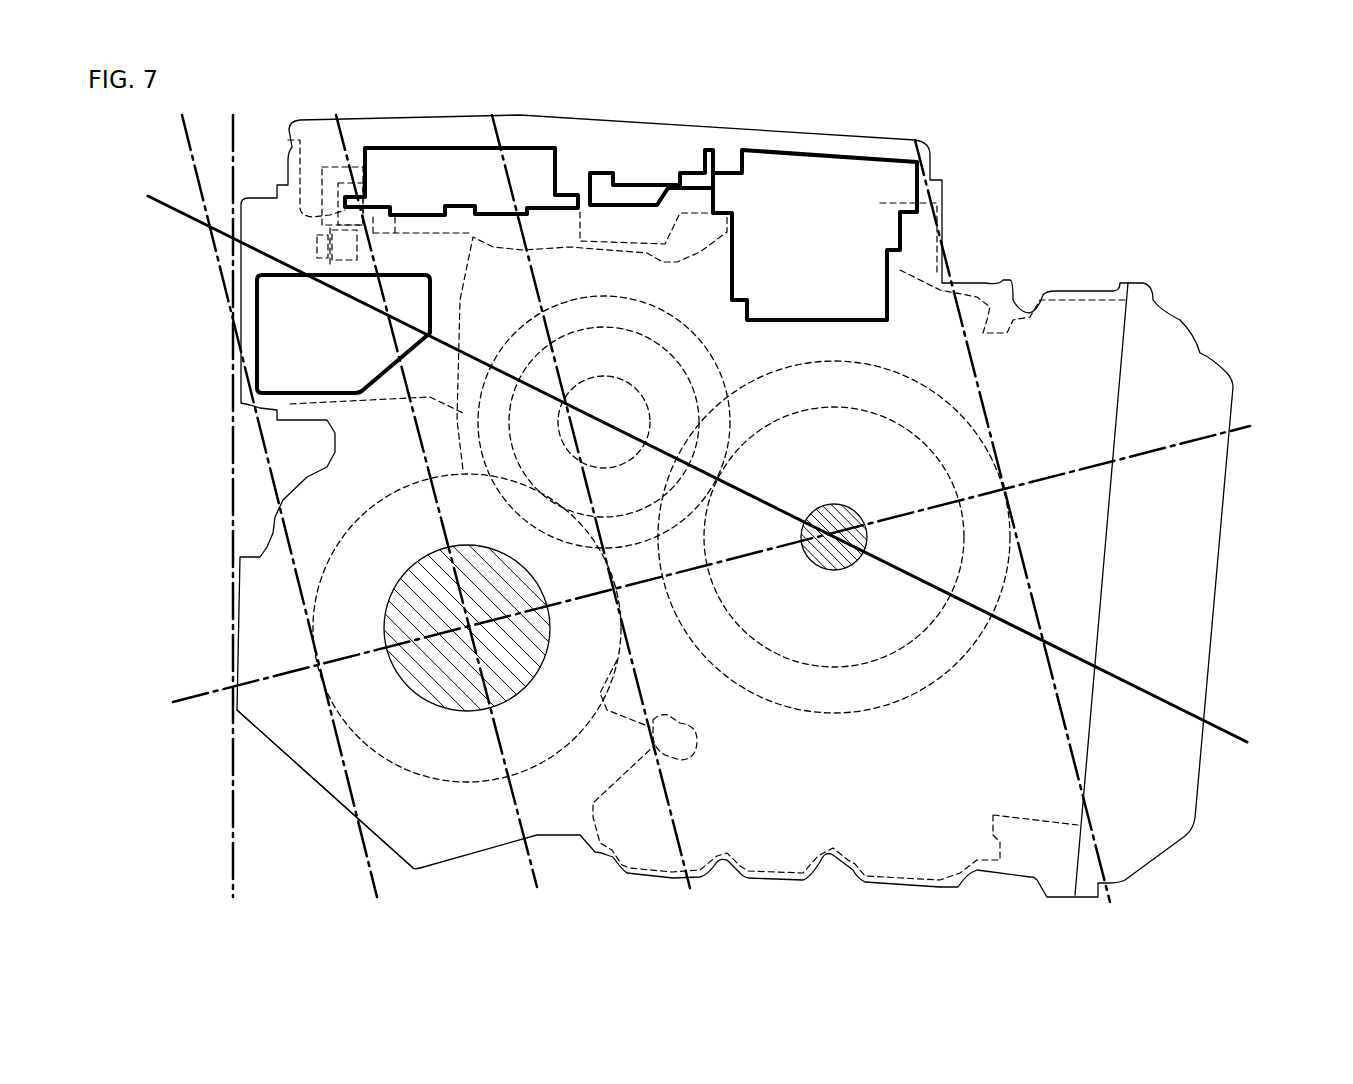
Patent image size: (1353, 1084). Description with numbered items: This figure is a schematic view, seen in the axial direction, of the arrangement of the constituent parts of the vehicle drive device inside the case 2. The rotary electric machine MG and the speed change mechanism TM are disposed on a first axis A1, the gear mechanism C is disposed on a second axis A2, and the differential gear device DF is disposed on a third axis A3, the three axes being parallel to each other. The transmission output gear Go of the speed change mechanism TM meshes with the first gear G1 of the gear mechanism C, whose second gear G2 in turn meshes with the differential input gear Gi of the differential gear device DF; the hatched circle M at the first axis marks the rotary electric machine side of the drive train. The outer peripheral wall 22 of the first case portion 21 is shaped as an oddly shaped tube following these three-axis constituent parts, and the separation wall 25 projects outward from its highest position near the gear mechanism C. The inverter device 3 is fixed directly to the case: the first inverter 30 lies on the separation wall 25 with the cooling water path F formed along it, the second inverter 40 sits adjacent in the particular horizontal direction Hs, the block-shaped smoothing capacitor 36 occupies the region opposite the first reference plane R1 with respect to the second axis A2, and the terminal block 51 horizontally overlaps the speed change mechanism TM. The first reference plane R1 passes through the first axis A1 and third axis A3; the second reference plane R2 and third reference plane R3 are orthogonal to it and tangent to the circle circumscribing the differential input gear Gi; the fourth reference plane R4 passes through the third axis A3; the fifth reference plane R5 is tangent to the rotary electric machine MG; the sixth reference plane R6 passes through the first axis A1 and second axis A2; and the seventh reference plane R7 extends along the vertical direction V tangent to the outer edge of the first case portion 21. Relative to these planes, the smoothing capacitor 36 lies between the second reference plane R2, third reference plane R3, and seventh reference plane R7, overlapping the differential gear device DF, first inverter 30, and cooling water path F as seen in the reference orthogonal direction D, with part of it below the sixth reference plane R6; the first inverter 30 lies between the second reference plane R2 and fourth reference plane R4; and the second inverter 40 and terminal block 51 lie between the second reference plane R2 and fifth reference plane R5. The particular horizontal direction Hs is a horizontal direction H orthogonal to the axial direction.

The case 2 is at (735, 506).
The first case portion 21 is at (318, 784).
The outer peripheral wall 22 is at (1053, 292).
The inverter device 3 is at (485, 285).
The first inverter 30 is at (470, 160).
The second inverter 40 is at (650, 182).
The smoothing capacitor 36 is at (370, 393).
The terminal block 51 is at (920, 198).
The separation wall 25 is at (460, 237).
The cooling water path F is at (318, 220).
The gear mechanism C is at (604, 403).
The first gear G1 is at (575, 300).
The second gear G2 is at (670, 352).
The first axis A1 is at (834, 537).
The second axis A2 is at (604, 422).
The third axis A3 is at (465, 632).
The rotary electric machine MG is at (940, 677).
The motor shaft M is at (840, 565).
The speed change mechanism TM is at (834, 588).
The transmission output gear Go is at (833, 668).
The differential gear device DF is at (467, 663).
The differential input gear Gi is at (430, 777).
The first reference plane R1 is at (1075, 470).
The second reference plane R2 is at (672, 812).
The third reference plane R3 is at (287, 533).
The fourth reference plane R4 is at (510, 783).
The fifth reference plane R5 is at (1037, 608).
The sixth reference plane R6 is at (1140, 689).
The seventh reference plane R7 is at (233, 553).
The horizontal direction H is at (1090, 150).
The particular horizontal direction Hs is at (1124, 167).
The vertical direction V is at (1275, 550).
The reference orthogonal direction D is at (182, 263).